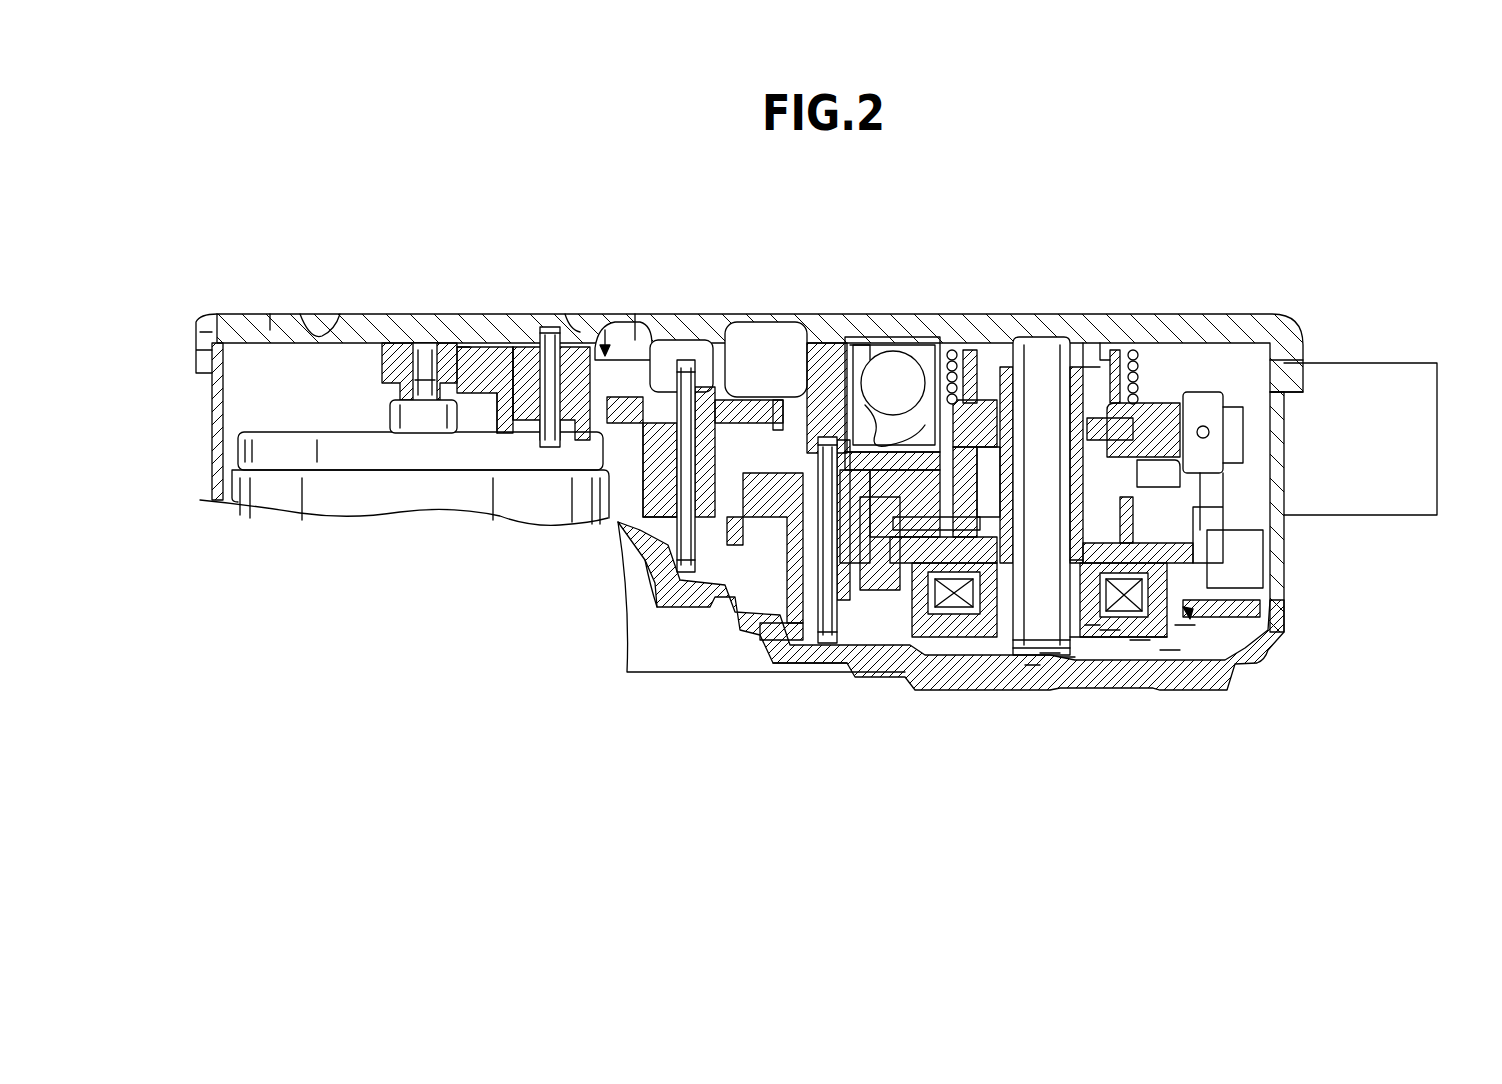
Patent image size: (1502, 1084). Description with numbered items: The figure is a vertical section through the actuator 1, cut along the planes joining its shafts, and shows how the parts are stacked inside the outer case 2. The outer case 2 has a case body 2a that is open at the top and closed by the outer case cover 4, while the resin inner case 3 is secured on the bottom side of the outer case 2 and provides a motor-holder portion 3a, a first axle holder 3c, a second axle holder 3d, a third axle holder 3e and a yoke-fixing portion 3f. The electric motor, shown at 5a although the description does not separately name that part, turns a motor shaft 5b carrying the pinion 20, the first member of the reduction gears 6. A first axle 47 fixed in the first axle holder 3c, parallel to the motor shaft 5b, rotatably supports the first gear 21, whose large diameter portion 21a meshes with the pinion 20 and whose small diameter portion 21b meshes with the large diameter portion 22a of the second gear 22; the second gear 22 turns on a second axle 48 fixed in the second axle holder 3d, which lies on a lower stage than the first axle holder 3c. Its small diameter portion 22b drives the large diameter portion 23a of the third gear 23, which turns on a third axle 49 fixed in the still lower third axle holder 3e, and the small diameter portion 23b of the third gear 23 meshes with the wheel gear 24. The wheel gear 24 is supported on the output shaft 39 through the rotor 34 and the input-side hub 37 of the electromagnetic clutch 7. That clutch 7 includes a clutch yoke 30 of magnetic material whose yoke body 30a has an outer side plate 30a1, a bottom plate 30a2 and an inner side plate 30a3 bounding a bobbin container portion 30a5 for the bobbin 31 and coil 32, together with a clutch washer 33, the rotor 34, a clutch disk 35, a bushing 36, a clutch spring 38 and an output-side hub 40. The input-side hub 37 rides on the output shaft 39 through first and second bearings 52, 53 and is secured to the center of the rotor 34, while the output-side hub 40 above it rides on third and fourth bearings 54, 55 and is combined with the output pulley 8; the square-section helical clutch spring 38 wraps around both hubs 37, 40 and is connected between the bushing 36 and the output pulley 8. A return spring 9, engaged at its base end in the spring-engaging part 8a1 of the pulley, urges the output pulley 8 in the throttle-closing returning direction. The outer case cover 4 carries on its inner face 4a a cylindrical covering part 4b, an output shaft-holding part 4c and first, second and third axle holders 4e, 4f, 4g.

The actuator 1 is at (1342, 806).
The outer case 2 is at (1283, 593).
The case body 2a is at (1283, 427).
The inner case 3 is at (1187, 613).
The motor-holder portion 3a is at (237, 447).
The first axle holder 3c is at (521, 390).
The second axle holder 3d is at (627, 560).
The third axle holder 3e is at (783, 668).
The yoke-fixing portion 3f is at (1170, 650).
The outer case cover 4 is at (1265, 326).
The inner face 4a is at (287, 330).
The cylindrical covering part 4b is at (1120, 343).
The output shaft-holding part 4c is at (1090, 330).
The first axle holder 4e is at (568, 313).
The second axle holder 4f is at (641, 323).
The third axle holder 4g is at (810, 337).
The screw head 5a is at (340, 337).
The motor shaft 5b is at (428, 395).
The reduction gears 6 is at (606, 330).
The electromagnetic clutch 7 is at (1180, 627).
The output pulley 8 is at (886, 365).
The spring-engaging part 8a1 is at (856, 370).
The return spring 9 is at (1150, 370).
The pinion 20 is at (385, 405).
The first gear 21 is at (478, 378).
The large diameter portion 21a is at (455, 375).
The small diameter portion 21b is at (505, 428).
The second gear 22 is at (750, 385).
The large diameter portion 22a is at (778, 395).
The small diameter portion 22b is at (603, 527).
The third gear 23 is at (797, 420).
The large diameter portion 23a is at (700, 390).
The small diameter portion 23b is at (747, 617).
The wheel gear 24 is at (1223, 553).
The clutch yoke 30 is at (1095, 645).
The yoke body 30a is at (1153, 640).
The outer side plate 30a1 is at (1110, 637).
The bottom plate 30a2 is at (1070, 657).
The inner side plate 30a3 is at (1030, 665).
The bobbin container portion 30a5 is at (1145, 640).
The bobbin 31 is at (933, 607).
The coil 32 is at (1100, 633).
The clutch washer 33 is at (937, 627).
The rotor 34 is at (1197, 563).
The clutch disk 35 is at (1187, 530).
The bushing 36 is at (1043, 653).
The input-side hub 37 is at (967, 622).
The clutch spring 38 is at (946, 378).
The output shaft 39 is at (1017, 648).
The output-side hub 40 is at (990, 420).
The first axle 47 is at (563, 323).
The second axle 48 is at (685, 580).
The third axle 49 is at (822, 640).
The first bearing 52 is at (1050, 400).
The second bearing 53 is at (1083, 380).
The third bearing 54 is at (1035, 420).
The fourth bearing 55 is at (1020, 390).